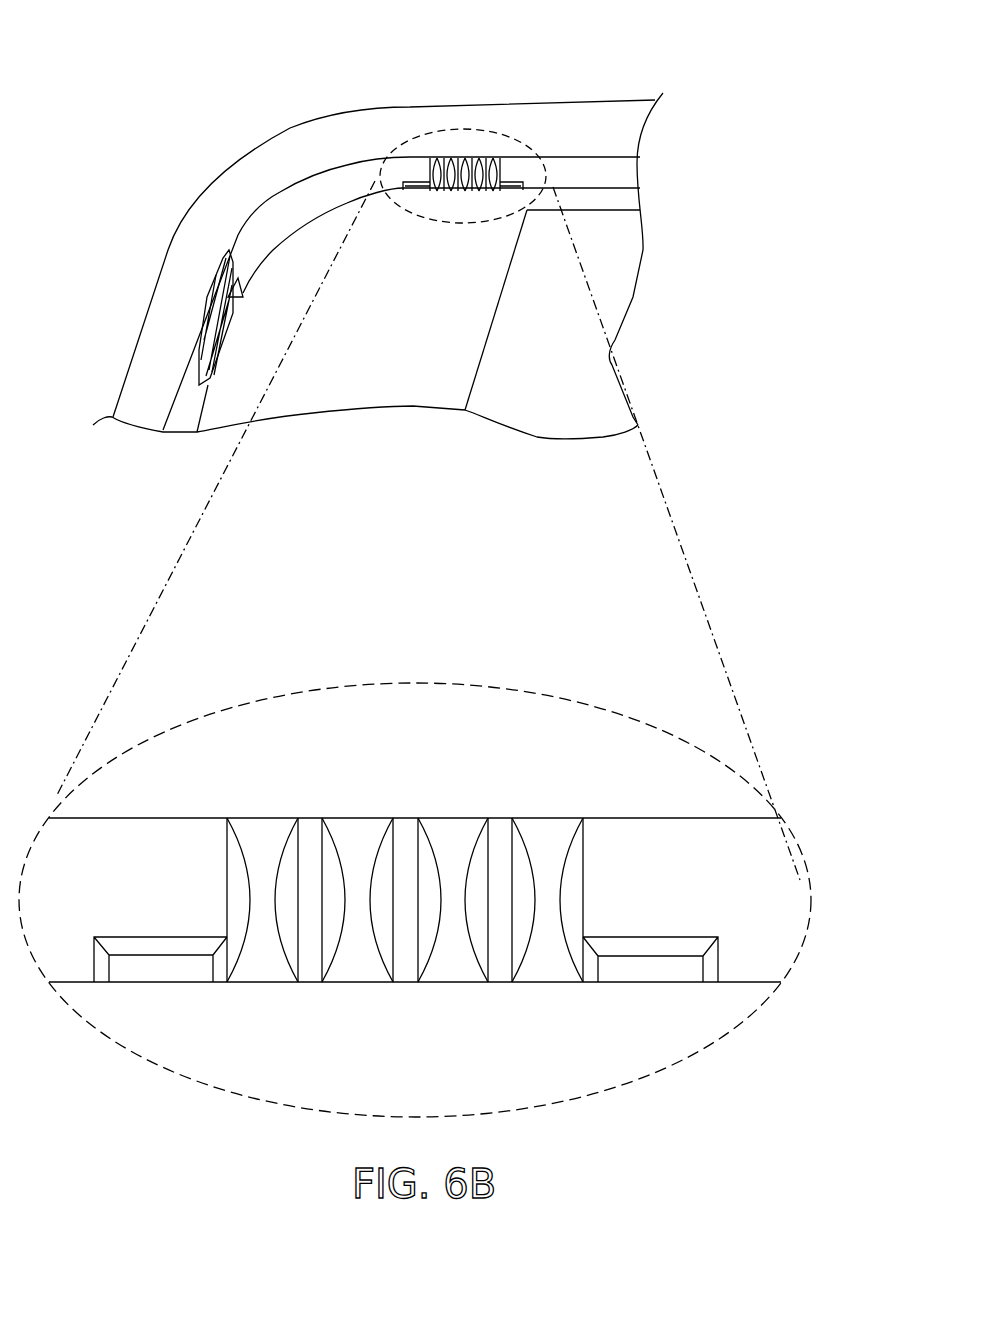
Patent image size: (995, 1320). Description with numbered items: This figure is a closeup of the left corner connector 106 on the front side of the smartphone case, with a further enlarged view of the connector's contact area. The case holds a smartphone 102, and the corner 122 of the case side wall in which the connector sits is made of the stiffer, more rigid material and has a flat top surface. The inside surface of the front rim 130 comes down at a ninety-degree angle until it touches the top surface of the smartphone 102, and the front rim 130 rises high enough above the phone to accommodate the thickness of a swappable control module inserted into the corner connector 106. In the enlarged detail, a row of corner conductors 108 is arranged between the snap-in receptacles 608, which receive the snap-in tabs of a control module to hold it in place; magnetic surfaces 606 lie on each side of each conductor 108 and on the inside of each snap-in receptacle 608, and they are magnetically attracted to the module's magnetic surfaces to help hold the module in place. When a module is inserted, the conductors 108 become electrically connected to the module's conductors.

The smartphone 102 is at (293, 311).
The left corner connector 106 is at (268, 92).
The corner conductors 108 is at (458, 148).
The corner 122 is at (243, 158).
The front rim 130 is at (270, 233).
The magnetic surfaces 606 is at (130, 852).
The snap-in receptacles 608 is at (163, 970).